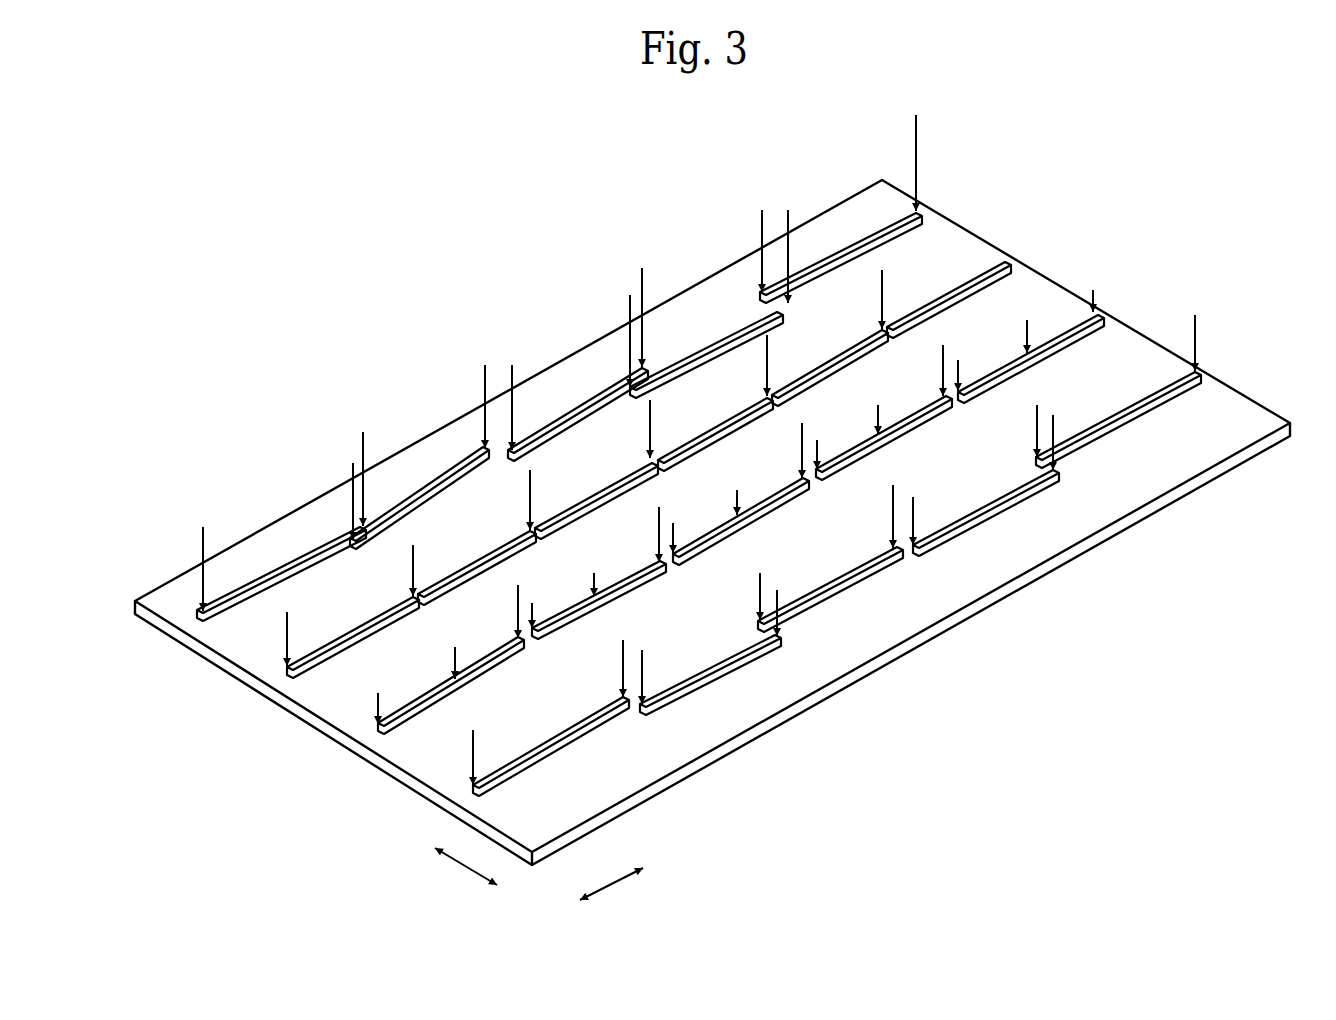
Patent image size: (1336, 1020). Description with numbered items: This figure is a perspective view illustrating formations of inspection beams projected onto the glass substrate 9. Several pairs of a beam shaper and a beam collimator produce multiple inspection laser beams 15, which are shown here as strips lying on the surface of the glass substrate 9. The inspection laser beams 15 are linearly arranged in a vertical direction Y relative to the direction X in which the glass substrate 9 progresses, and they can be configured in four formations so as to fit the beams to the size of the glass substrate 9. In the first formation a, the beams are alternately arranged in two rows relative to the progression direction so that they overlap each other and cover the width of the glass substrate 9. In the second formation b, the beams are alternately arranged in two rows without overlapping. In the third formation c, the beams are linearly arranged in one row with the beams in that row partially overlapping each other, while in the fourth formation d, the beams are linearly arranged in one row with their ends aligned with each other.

The glass substrate 9 is at (763, 705).
The inspection laser beam 15 is at (651, 541).
The first formation a is at (162, 645).
The second formation b is at (438, 815).
The third formation c is at (345, 760).
The fourth formation d is at (242, 700).
The progression direction of the glass substrate X is at (466, 879).
The vertical direction Y is at (611, 896).